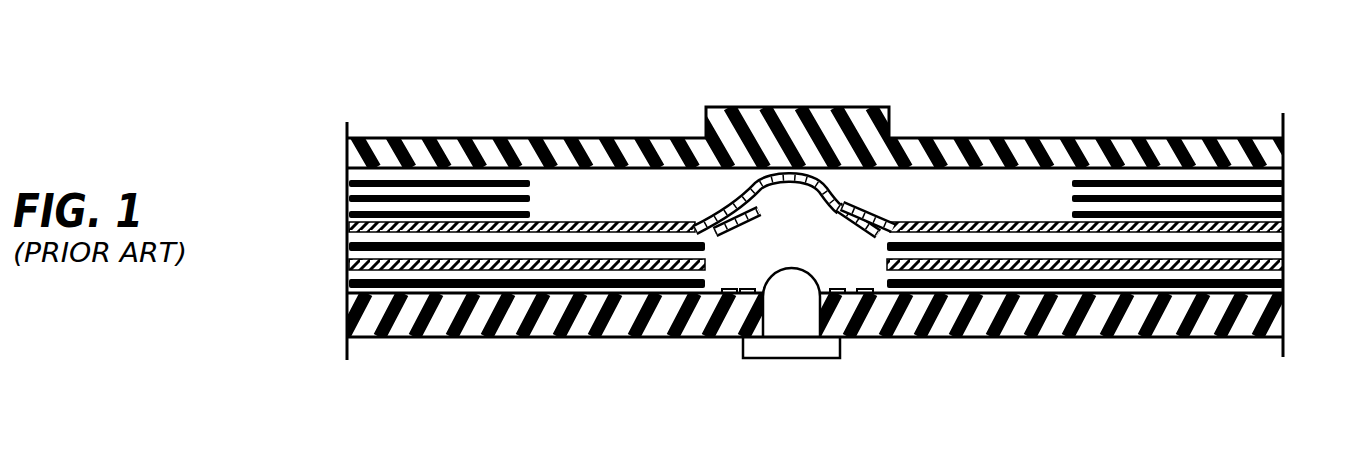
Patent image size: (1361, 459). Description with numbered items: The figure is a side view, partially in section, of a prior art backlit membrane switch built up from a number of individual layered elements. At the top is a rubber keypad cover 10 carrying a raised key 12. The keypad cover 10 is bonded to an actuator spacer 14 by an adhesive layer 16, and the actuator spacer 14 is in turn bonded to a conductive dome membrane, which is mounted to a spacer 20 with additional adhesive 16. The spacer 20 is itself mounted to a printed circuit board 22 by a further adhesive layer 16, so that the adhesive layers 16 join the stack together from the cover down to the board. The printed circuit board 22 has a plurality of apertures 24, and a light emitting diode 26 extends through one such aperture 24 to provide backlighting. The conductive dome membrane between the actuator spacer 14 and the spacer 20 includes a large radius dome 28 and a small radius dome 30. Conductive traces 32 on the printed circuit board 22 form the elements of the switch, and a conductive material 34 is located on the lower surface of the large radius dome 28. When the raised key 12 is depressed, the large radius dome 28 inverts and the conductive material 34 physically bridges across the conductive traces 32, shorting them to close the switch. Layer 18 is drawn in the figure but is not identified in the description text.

The rubber keypad cover 10 is at (590, 137).
The raised key 12 is at (817, 106).
The actuator spacer 14 is at (347, 201).
The adhesive layer 16 is at (1283, 228).
The spacer layer 18 is at (350, 229).
The spacer 20 is at (345, 242).
The printed circuit board 22 is at (1030, 338).
The aperture 24 is at (761, 316).
The light emitting diode 26 is at (836, 358).
The large radius dome 28 is at (862, 210).
The small radius dome 30 is at (763, 181).
The conductive traces 32 is at (746, 289).
The conductive material 34 is at (758, 222).